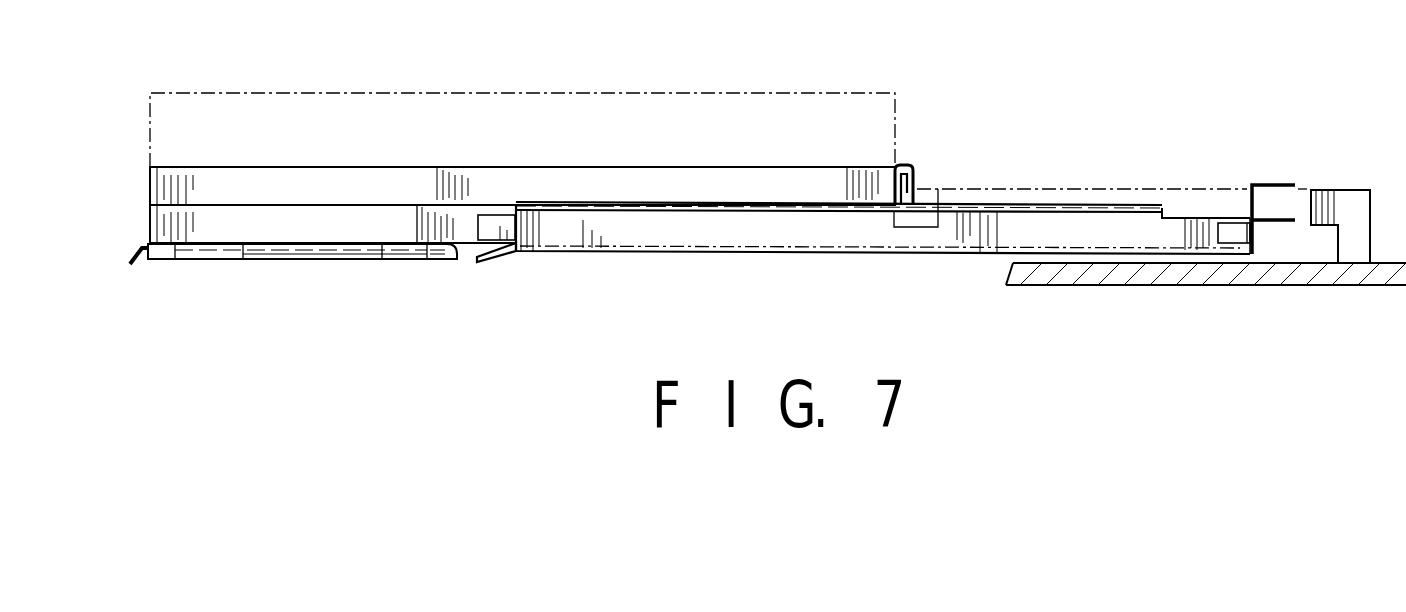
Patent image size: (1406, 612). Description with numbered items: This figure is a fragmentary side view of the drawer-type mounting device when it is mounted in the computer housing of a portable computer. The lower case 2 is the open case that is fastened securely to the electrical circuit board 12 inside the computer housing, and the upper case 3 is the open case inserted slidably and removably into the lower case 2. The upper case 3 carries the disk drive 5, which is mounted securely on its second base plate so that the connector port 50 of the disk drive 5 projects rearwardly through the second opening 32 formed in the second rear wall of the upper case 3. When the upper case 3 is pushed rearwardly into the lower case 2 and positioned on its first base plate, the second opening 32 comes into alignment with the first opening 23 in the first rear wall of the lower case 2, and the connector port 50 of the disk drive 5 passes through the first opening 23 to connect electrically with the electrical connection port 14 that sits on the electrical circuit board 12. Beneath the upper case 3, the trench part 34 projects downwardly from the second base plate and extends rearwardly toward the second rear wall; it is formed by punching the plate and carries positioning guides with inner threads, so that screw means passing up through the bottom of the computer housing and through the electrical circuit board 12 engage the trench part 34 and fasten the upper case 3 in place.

The disk drive 5 is at (512, 130).
The second opening 32 is at (918, 190).
The lower case 2 is at (1093, 190).
The connector port 50 is at (925, 199).
The first opening 23 is at (1246, 198).
The electrical connection port 14 is at (1338, 212).
The electrical circuit board 12 is at (1352, 265).
The upper case 3 is at (371, 272).
The trench part 34 is at (442, 262).